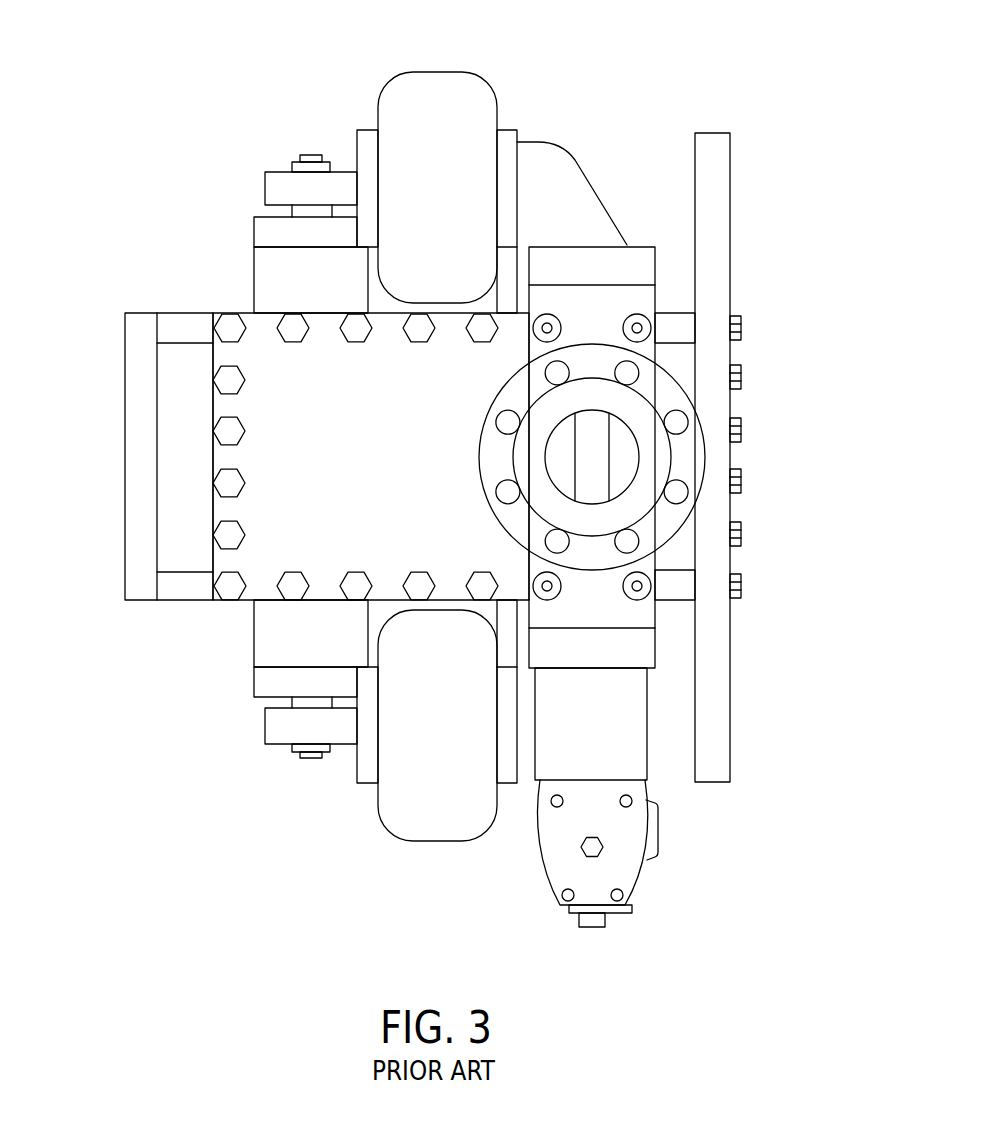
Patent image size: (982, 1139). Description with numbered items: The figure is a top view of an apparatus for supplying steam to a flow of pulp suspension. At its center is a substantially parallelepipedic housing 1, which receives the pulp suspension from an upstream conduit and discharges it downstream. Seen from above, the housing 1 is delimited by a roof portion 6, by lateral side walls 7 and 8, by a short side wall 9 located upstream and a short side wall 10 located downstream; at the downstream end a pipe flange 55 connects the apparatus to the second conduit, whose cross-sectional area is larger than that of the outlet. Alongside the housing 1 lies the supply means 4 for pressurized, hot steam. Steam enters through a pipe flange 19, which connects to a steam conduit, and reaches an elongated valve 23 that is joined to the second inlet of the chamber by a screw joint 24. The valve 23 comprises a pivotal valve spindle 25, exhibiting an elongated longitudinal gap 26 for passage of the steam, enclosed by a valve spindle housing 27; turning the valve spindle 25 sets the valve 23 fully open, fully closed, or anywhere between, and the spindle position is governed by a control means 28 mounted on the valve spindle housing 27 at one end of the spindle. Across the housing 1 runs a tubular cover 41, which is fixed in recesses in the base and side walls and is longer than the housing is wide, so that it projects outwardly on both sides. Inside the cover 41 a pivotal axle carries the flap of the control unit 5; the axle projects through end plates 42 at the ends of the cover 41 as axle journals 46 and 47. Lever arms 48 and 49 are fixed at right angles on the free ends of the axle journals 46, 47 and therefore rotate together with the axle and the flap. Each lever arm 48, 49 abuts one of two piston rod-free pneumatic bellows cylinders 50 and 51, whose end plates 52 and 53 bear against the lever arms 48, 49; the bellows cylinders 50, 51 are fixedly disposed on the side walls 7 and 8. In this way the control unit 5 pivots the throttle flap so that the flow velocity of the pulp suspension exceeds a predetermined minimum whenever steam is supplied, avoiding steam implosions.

The housing 1 is at (90, 311).
The supply means 4 is at (707, 424).
The control unit 5 is at (238, 250).
The roof portion 6 is at (297, 430).
The side wall 7 is at (177, 593).
The side wall 8 is at (187, 322).
The short side wall 9 is at (134, 440).
The short side wall 10 is at (718, 504).
The pipe flange 19 is at (598, 352).
The valve 23 is at (641, 238).
The screw joint 24 is at (643, 298).
The valve spindle 25 is at (625, 461).
The longitudinal gap 26 is at (600, 442).
The valve spindle housing 27 is at (561, 297).
The control means 28 is at (557, 867).
The tubular cover 41 is at (267, 633).
The end plate 42 is at (263, 222).
The axle journal 46 is at (309, 757).
The axle journal 47 is at (306, 154).
The lever arm 48 is at (275, 724).
The lever arm 49 is at (278, 178).
The bellows cylinder 50 is at (438, 802).
The bellows cylinder 51 is at (437, 102).
The end plate 52 is at (365, 767).
The end plate 53 is at (363, 153).
The pipe flange 55 is at (718, 200).